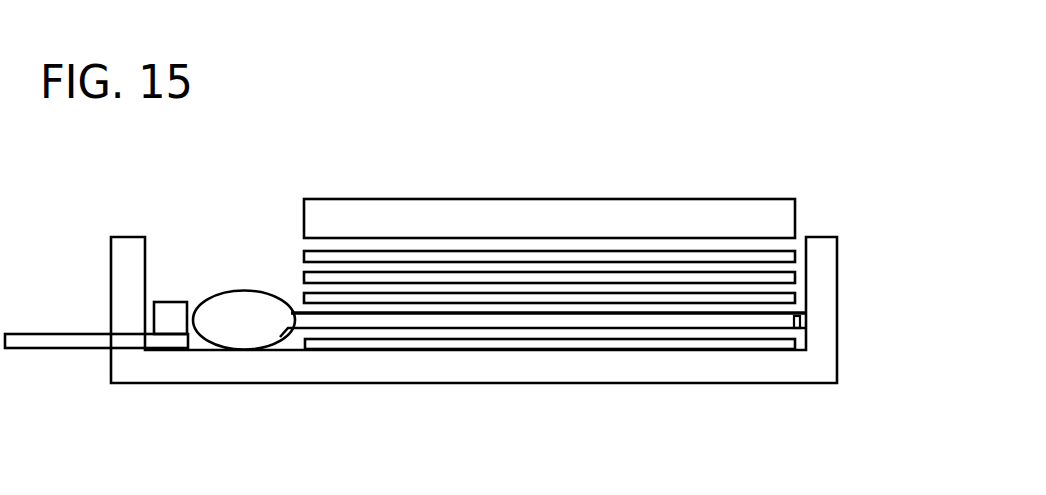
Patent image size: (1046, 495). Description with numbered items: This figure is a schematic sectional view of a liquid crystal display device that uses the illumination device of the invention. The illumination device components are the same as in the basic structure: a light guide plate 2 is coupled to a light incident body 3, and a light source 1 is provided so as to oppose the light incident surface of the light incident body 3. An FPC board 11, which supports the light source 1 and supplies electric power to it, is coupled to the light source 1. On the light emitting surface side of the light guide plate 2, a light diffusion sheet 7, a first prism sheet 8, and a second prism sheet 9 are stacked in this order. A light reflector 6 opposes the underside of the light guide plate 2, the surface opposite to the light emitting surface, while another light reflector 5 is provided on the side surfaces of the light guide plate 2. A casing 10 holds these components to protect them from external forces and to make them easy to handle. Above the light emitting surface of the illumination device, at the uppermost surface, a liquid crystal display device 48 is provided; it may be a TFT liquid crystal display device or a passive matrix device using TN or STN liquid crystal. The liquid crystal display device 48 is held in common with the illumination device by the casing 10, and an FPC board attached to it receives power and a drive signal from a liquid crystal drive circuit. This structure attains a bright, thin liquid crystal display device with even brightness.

The light source 1 is at (168, 302).
The light guide plate 2 is at (332, 322).
The light incident body 3 is at (233, 290).
The light reflector 5 is at (800, 318).
The light reflector 6 is at (405, 343).
The light diffusion sheet 7 is at (303, 300).
The first prism sheet 8 is at (303, 278).
The second prism sheet 9 is at (793, 252).
The casing 10 is at (760, 383).
The FPC board 11 is at (63, 340).
The liquid crystal display device 48 is at (773, 198).